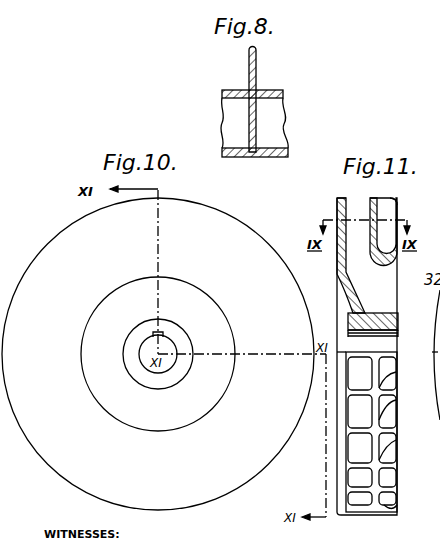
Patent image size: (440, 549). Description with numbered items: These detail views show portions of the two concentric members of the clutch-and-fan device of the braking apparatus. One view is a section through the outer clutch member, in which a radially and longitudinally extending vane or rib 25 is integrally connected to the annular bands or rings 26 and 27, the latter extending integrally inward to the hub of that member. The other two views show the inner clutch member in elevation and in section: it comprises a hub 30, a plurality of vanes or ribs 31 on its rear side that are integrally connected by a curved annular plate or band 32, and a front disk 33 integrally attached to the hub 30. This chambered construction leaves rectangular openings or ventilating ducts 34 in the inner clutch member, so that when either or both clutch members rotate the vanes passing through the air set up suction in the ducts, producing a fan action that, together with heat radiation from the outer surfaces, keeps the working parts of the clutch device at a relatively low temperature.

In FIG. 8, the vanes or ribs 25 is at (256, 73).
In FIG. 8, the annular band or ring 26 is at (270, 157).
In FIG. 8, the annular band or ring 27 is at (283, 94).
In FIG. 10, the hub 30 is at (186, 346).
In FIG. 11, the hub 30 is at (398, 313).
In FIG. 11, the vanes or ribs 31 is at (397, 205).
In FIG. 11, the curved annular plate or band 32 is at (371, 199).
In FIG. 10, the front disk 33 is at (158, 354).
In FIG. 11, the front disk 33 is at (337, 206).
In FIG. 11, the rectangular openings or ventilating ducts 34 is at (365, 417).